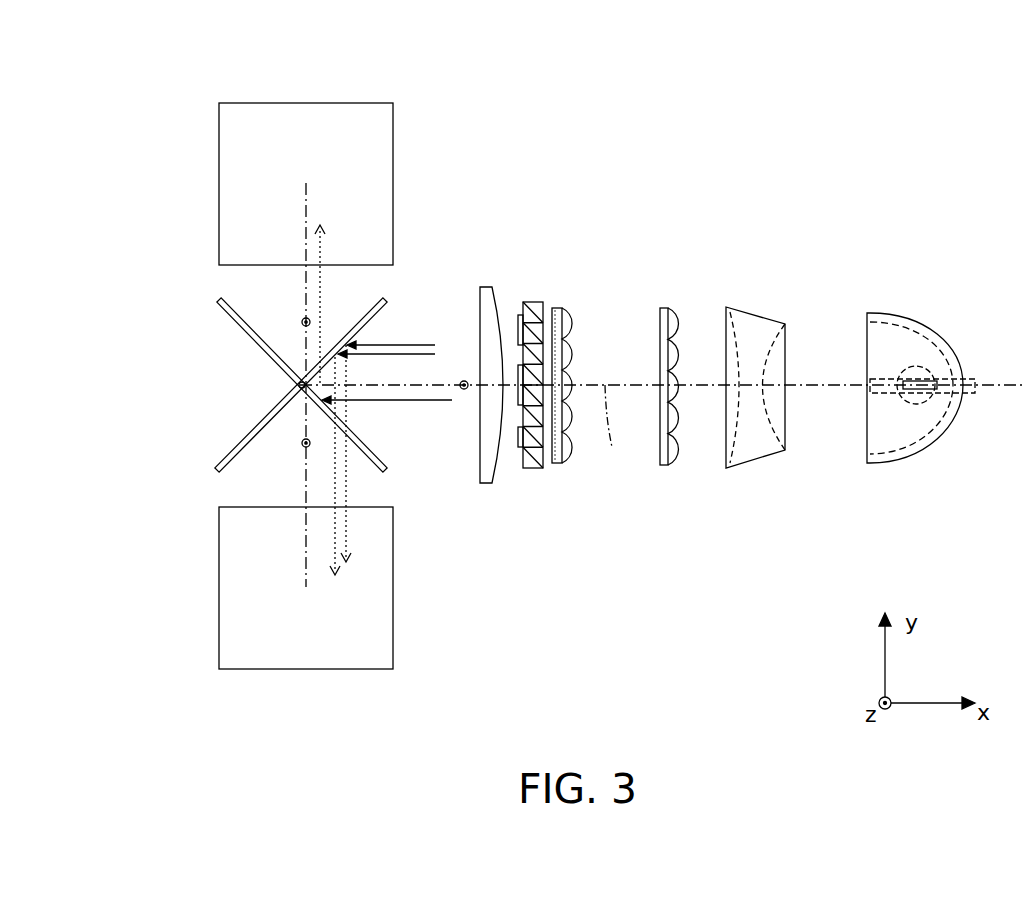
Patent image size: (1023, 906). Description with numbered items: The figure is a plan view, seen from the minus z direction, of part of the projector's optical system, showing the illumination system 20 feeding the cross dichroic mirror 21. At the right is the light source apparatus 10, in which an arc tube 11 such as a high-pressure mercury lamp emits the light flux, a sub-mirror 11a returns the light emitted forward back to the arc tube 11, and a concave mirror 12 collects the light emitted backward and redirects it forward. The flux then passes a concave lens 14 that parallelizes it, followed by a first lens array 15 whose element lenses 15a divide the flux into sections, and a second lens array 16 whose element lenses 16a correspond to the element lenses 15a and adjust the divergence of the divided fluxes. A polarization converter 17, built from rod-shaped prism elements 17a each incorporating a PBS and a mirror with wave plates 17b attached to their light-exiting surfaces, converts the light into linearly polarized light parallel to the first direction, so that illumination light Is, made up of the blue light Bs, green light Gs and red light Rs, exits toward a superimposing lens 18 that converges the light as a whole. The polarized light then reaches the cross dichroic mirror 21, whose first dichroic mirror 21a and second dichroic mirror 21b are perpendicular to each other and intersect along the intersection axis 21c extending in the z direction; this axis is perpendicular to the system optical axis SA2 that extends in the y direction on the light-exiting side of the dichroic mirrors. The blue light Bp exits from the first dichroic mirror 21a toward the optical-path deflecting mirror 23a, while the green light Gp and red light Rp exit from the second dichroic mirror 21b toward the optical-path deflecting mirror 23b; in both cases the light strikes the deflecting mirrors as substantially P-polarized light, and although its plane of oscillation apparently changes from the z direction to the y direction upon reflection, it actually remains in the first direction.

The light source apparatus 10 is at (939, 387).
The arc tube 11 is at (928, 415).
The sub-mirror 11a is at (900, 393).
The concave mirror 12 is at (918, 323).
The concave lens 14 is at (753, 328).
The first lens array 15 is at (691, 348).
The element lenses 15a is at (675, 323).
The second lens array 16 is at (589, 349).
The element lenses 16a is at (568, 327).
The polarization converter 17 is at (527, 390).
The prism elements 17a is at (537, 463).
The wave plates 17b is at (523, 447).
The superimposing lens 18 is at (483, 305).
The illumination system 20 is at (668, 510).
The cross dichroic mirror 21 is at (264, 343).
The first dichroic mirror 21a is at (245, 328).
The second dichroic mirror 21b is at (243, 442).
The intersection axis 21c is at (297, 383).
The optical-path deflecting mirror 23a is at (306, 125).
The optical-path deflecting mirror 23b is at (305, 650).
The red light Rs is at (387, 345).
The green light Gs is at (415, 354).
The blue light Bs is at (425, 400).
The illumination light Is is at (476, 322).
The blue light Bp is at (318, 300).
The red light Rp is at (335, 457).
The green light Gp is at (345, 483).
The system optical axis SA2 is at (610, 429).